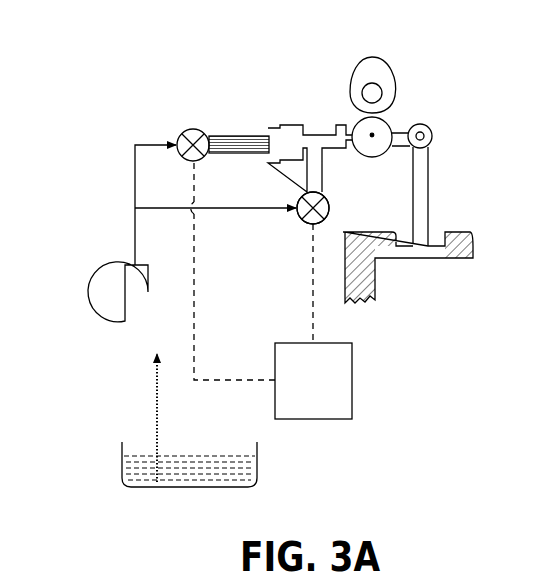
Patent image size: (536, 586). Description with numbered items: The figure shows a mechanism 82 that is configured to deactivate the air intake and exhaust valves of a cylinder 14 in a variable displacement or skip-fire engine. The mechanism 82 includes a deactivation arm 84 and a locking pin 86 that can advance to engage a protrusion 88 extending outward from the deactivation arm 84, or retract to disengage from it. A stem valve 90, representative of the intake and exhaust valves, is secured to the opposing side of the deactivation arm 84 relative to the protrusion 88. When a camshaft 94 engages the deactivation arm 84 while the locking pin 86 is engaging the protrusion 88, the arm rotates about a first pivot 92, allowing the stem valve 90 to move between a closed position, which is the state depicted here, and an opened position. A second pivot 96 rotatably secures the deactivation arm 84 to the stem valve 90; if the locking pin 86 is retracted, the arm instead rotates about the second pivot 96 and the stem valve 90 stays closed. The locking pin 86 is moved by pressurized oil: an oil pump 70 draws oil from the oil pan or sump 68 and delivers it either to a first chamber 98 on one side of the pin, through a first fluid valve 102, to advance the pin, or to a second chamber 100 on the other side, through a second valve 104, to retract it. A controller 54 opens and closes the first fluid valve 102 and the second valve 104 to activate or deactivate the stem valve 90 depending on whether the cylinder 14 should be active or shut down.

The mechanism 82 is at (436, 50).
The deactivation arm 84 is at (436, 137).
The locking pin 86 is at (287, 125).
The protrusion 88 is at (350, 126).
The stem valve 90 is at (430, 222).
The first pivot 92 is at (372, 137).
The camshaft 94 is at (352, 84).
The second pivot 96 is at (418, 124).
The first chamber 98 is at (232, 136).
The second chamber 100 is at (326, 197).
The first fluid valve 102 is at (181, 133).
The second valve 104 is at (300, 200).
The cylinder 14 is at (440, 294).
The controller 54 is at (298, 343).
The oil pan or sump 68 is at (208, 488).
The oil pump 70 is at (124, 300).